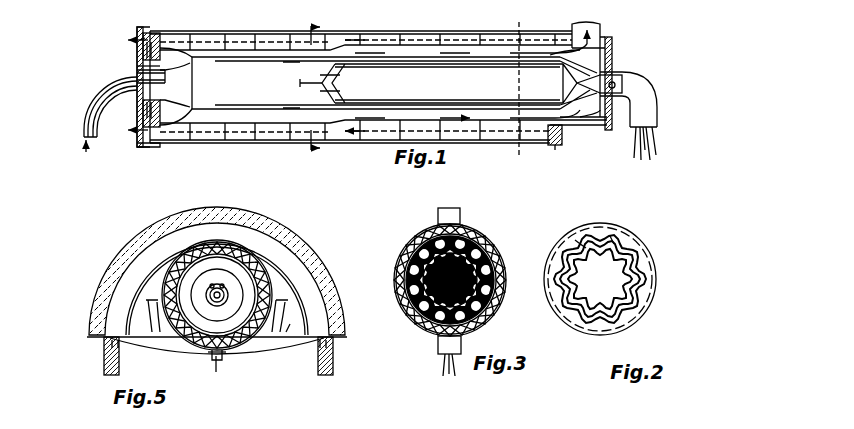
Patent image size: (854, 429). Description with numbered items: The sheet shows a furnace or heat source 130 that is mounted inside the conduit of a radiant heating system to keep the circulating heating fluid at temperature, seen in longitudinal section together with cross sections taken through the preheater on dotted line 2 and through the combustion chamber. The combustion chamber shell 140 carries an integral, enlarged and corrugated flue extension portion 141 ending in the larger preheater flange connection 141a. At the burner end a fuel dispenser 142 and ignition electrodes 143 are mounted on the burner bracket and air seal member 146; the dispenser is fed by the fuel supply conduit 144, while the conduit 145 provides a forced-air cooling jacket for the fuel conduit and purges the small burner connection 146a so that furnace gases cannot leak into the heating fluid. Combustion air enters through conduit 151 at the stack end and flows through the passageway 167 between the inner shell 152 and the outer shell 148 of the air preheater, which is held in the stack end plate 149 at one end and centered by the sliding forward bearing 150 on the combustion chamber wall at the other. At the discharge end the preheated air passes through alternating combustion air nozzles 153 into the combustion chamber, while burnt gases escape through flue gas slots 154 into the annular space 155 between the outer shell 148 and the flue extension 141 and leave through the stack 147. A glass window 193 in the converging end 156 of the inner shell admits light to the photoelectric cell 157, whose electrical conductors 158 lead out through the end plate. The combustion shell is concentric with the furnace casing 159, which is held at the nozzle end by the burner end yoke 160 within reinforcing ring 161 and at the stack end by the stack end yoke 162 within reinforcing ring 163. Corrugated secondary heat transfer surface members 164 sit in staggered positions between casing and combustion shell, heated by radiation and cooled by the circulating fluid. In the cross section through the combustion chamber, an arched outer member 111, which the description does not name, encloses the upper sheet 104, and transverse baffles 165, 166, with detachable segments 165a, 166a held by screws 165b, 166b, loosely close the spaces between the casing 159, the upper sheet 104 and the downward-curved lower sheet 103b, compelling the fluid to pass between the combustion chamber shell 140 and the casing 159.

In FIG. 1, the section line 2— 2 is at (518, 85).
In FIG. 5, the lower sheet 103b is at (206, 354).
In FIG. 5, the upper sheet 104 is at (126, 311).
In FIG. 5, the refractory dome 111 is at (152, 232).
In FIG. 1, the heat source 130 is at (128, 36).
In FIG. 1, the combustion chamber shell 140 is at (232, 60).
In FIG. 5, the combustion chamber shell 140 is at (248, 248).
In FIG. 3, the combustion chamber shell 140 is at (494, 253).
In FIG. 1, the flue extension portion 141 is at (424, 40).
In FIG. 2, the flue extension portion 141 is at (632, 293).
In FIG. 1, the preheater flange connection 141a is at (610, 137).
In FIG. 1, the fuel dispenser 142 is at (168, 85).
In FIG. 1, the ignition electrodes 143 is at (168, 73).
In FIG. 1, the fuel supply conduit 144 is at (86, 123).
In FIG. 5, the fuel supply conduit 144 is at (222, 372).
In FIG. 1, the cooling air conduit 145 is at (90, 100).
In FIG. 5, the cooling air conduit 145 is at (224, 358).
In FIG. 1, the burner bracket and air seal member 146 is at (137, 66).
In FIG. 1, the burner connection 146a is at (140, 40).
In FIG. 1, the stack 147 is at (601, 26).
In FIG. 3, the stack 147 is at (458, 210).
In FIG. 2, the outer shell of the air preheater 148 is at (640, 277).
In FIG. 1, the stack end plate 149 is at (612, 46).
In FIG. 1, the forward bearing 150 is at (325, 145).
In FIG. 1, the combustion air conduit 151 is at (657, 100).
In FIG. 3, the combustion air conduit 151 is at (436, 345).
In FIG. 3, the inner shell of the air preheater 152 is at (400, 298).
In FIG. 2, the inner shell of the air preheater 152 is at (642, 256).
In FIG. 1, the combustion air nozzles 153 is at (310, 80).
In FIG. 3, the combustion air nozzles 153 is at (428, 230).
In FIG. 1, the flue gas slots 154 is at (335, 88).
In FIG. 3, the flue gas slots 154 is at (470, 248).
In FIG. 2, the annular space 155 is at (578, 242).
In FIG. 1, the converging end 156 is at (578, 60).
In FIG. 1, the photoelectric cell 157 is at (626, 76).
In FIG. 1, the electrical conductors 158 is at (650, 119).
In FIG. 3, the electrical conductors 158 is at (442, 370).
In FIG. 1, the furnace casing 159 is at (232, 55).
In FIG. 5, the furnace casing 159 is at (270, 272).
In FIG. 3, the furnace casing 159 is at (500, 266).
In FIG. 2, the furnace casing 159 is at (640, 238).
In FIG. 1, the burner end yoke 160 is at (136, 140).
In FIG. 1, the reinforcing ring 161 is at (152, 147).
In FIG. 1, the stack end yoke 162 is at (562, 132).
In FIG. 1, the reinforcing ring 163 is at (556, 150).
In FIG. 1, the secondary heat transfer surface members 164 is at (272, 36).
In FIG. 5, the secondary heat transfer surface members 164 is at (207, 244).
In FIG. 3, the secondary heat transfer surface members 164 is at (404, 256).
In FIG. 5, the transverse baffle 165 is at (144, 348).
In FIG. 5, the detachable segment 165a is at (182, 350).
In FIG. 5, the screws 165b is at (153, 308).
In FIG. 5, the transverse baffle 166 is at (294, 350).
In FIG. 5, the detachable segment 166a is at (270, 330).
In FIG. 5, the screws 166b is at (293, 320).
In FIG. 2, the passageway 167 is at (612, 238).
In FIG. 1, the glass window 193 is at (604, 64).
In FIG. 3, the glass window 193 is at (496, 308).